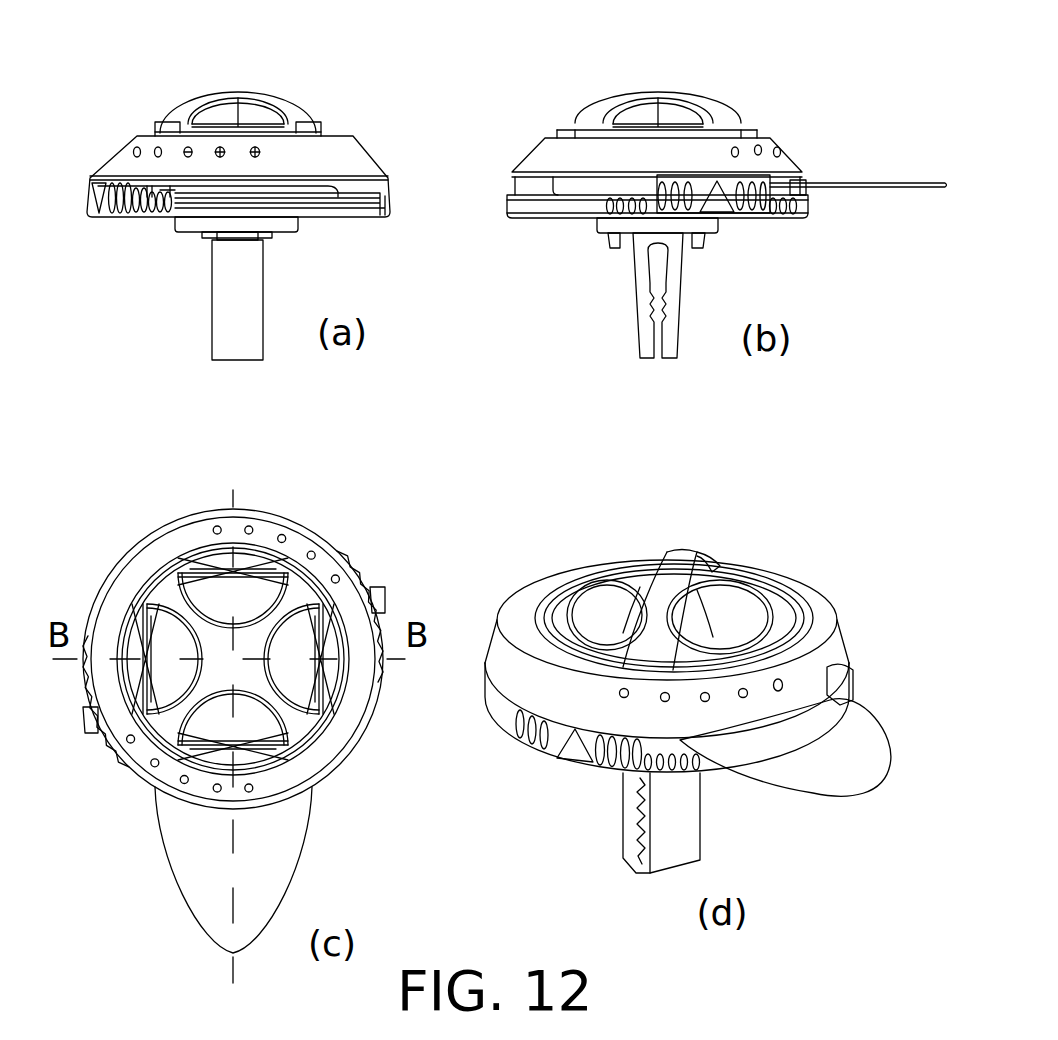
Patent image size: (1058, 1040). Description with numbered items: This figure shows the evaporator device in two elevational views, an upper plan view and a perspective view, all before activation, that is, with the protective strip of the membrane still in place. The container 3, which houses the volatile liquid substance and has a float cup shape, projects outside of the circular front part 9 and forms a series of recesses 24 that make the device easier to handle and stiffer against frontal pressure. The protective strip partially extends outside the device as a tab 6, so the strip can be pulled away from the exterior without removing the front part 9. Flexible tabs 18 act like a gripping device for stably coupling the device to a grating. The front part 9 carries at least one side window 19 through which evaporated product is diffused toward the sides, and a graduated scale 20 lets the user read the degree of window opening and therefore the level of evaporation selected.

The container 3 is at (268, 93).
The recesses 24 is at (210, 115).
The front part 9 is at (358, 162).
The graduated scale 20 is at (113, 217).
The flexible tabs 18 is at (252, 308).
The tab 6 is at (860, 180).
The side window 19 is at (795, 190).